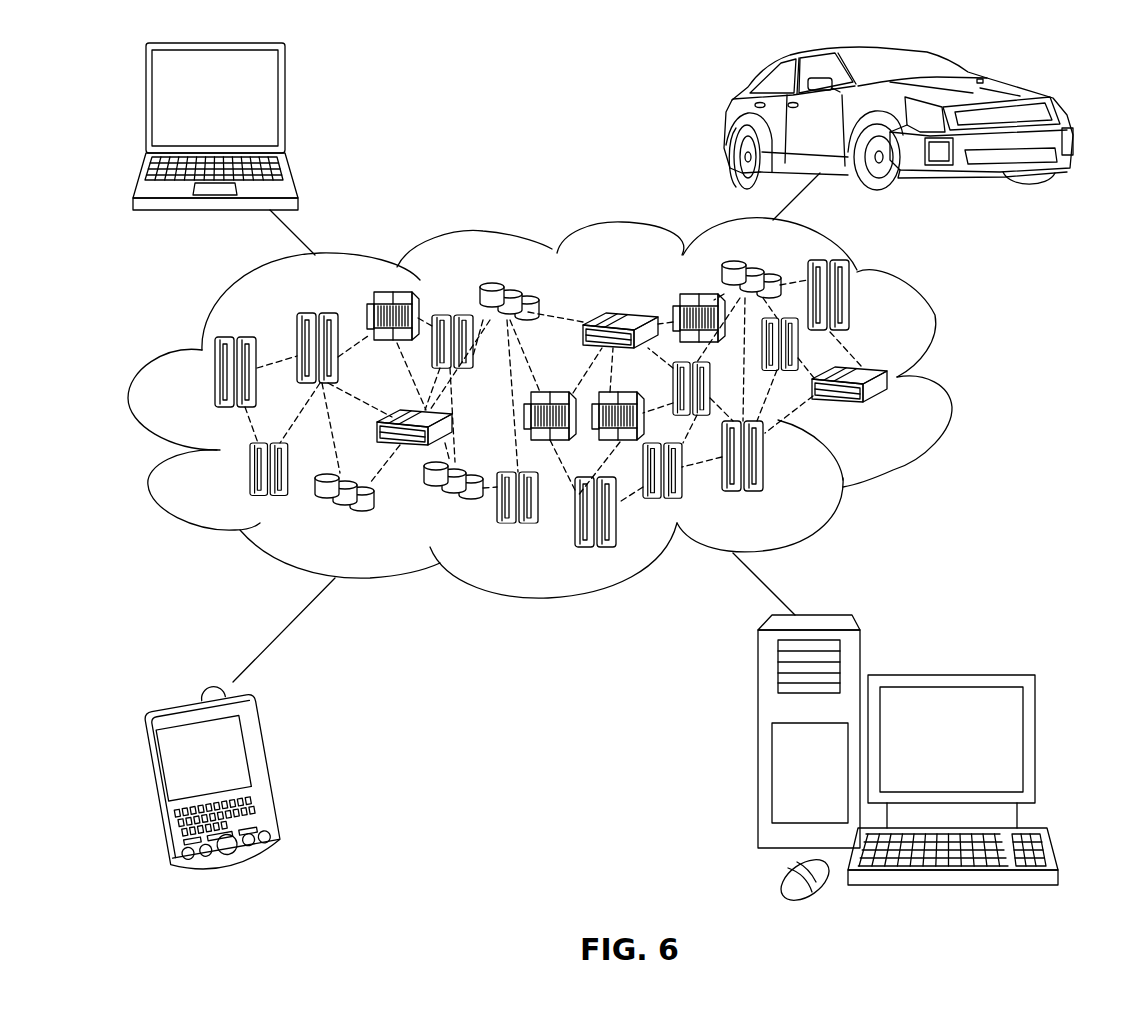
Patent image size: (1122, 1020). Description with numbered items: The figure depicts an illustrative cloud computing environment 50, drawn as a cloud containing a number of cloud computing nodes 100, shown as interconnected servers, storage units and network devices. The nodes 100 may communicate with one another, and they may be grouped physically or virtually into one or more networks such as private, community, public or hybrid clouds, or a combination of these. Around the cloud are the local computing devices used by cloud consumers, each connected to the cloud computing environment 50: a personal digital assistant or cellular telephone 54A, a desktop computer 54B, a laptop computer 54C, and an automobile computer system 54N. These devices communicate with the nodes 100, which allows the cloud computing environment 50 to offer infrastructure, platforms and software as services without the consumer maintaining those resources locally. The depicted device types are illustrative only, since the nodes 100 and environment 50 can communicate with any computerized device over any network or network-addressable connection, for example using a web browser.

The laptop computer 54C is at (285, 108).
The automobile computer system 54N is at (724, 122).
The personal digital assistant (PDA) or cellular telephone 54A is at (272, 772).
The desktop computer 54B is at (947, 672).
The cloud computing environment 50 is at (950, 382).
The cloud computing nodes 100 is at (613, 403).